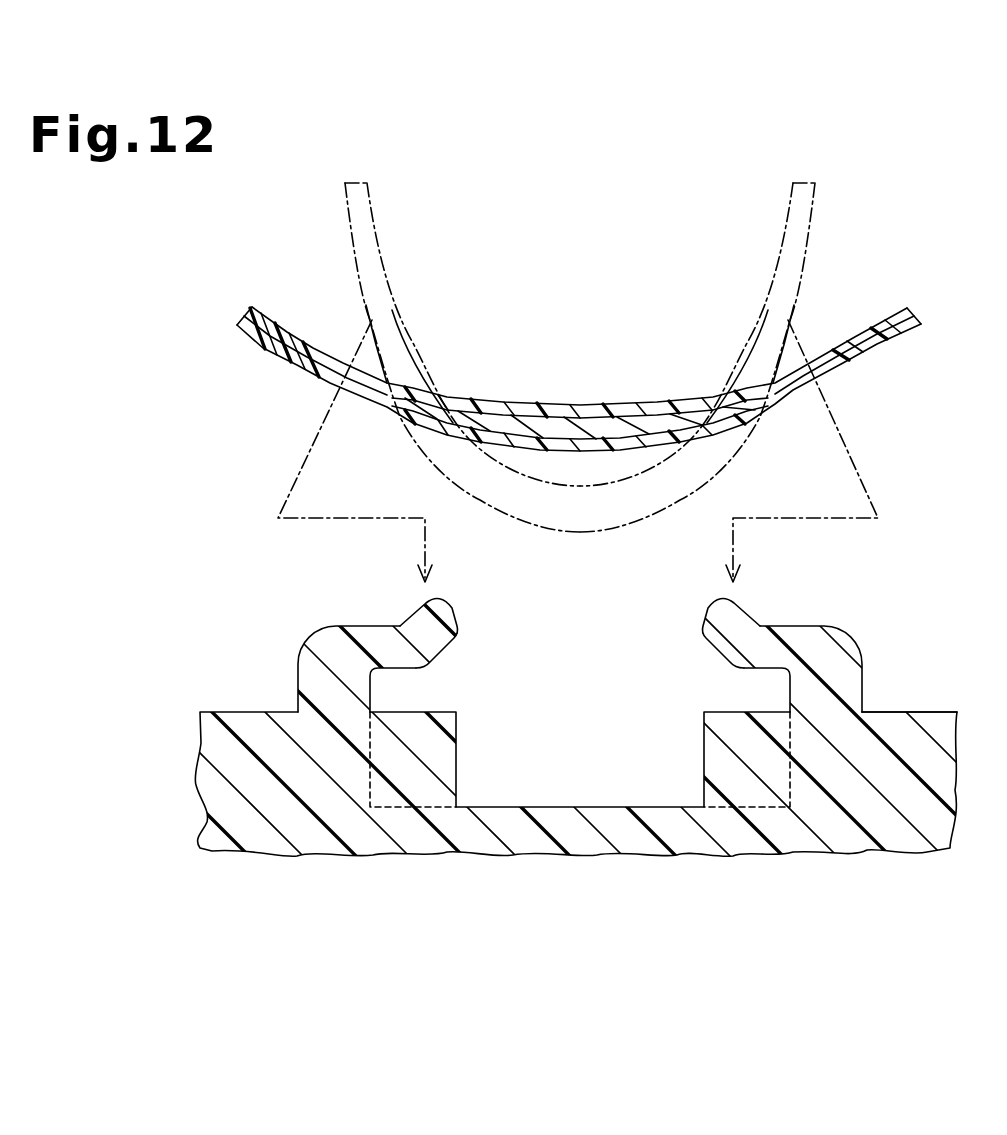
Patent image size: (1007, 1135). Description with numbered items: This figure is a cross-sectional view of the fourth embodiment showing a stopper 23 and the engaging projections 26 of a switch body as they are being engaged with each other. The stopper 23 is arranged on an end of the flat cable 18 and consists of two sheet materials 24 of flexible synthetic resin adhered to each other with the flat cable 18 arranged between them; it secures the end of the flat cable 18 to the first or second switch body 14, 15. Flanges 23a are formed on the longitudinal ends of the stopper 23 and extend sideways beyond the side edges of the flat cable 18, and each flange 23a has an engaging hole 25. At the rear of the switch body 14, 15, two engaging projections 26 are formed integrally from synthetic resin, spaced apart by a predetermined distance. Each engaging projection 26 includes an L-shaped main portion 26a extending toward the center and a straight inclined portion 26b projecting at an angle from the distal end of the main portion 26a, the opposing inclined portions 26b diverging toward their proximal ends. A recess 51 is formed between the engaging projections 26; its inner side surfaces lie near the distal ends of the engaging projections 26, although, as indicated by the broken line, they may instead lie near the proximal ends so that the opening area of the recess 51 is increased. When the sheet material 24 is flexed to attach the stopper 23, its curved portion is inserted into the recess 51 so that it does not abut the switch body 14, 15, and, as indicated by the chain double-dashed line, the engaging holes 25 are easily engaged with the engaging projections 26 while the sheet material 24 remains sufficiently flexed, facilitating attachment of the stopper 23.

The first switch body 14 is at (943, 721).
The second switch body 15 is at (924, 681).
The flat cable 18 is at (640, 423).
The stopper 23 is at (579, 460).
The flange 23a is at (272, 325).
The sheet material 24 is at (573, 405).
The engaging hole 25 is at (308, 366).
The engaging projection 26 is at (582, 641).
The main portion 26a is at (323, 652).
The inclined portion 26b is at (420, 618).
The recess 51 is at (602, 797).